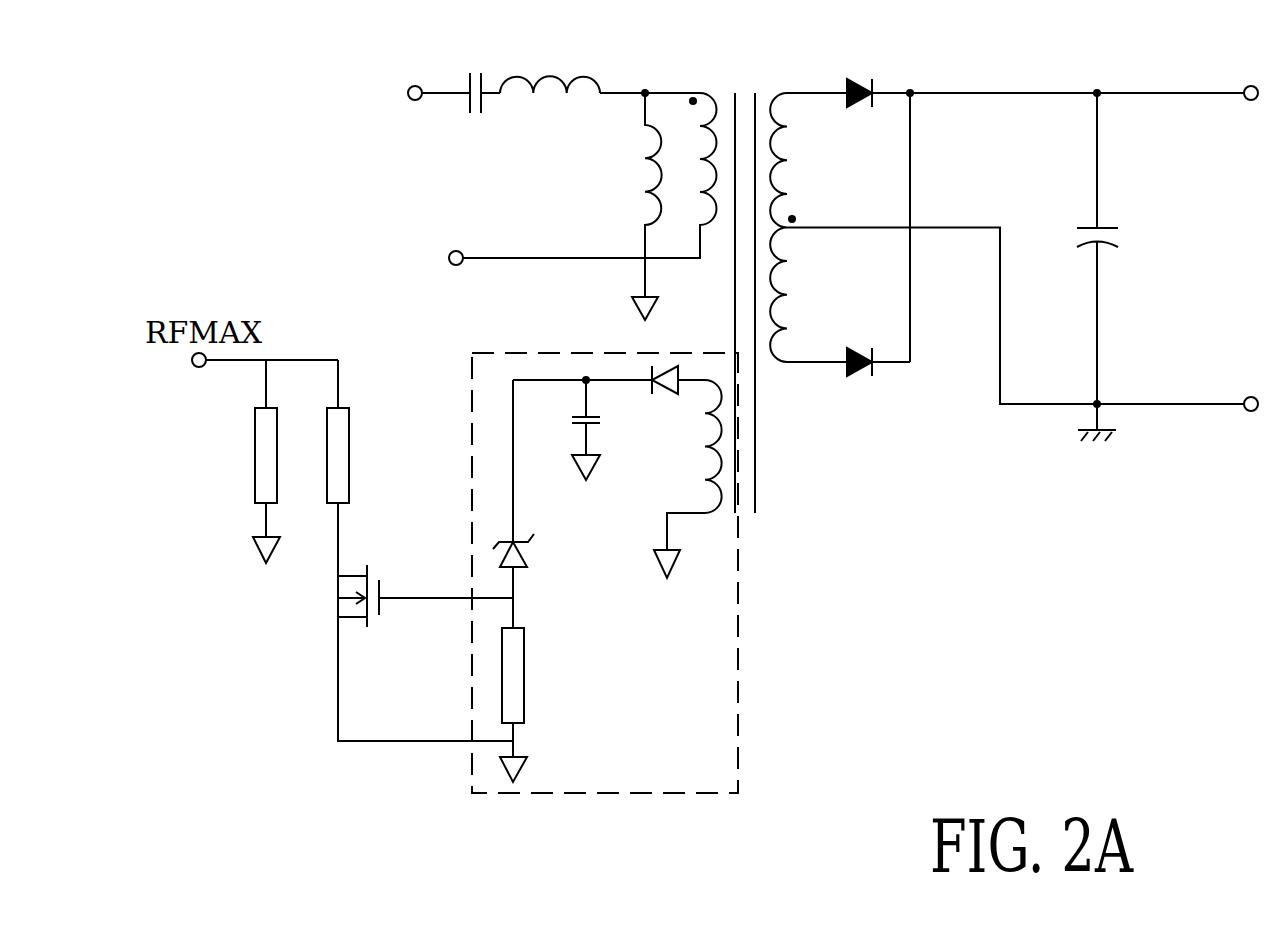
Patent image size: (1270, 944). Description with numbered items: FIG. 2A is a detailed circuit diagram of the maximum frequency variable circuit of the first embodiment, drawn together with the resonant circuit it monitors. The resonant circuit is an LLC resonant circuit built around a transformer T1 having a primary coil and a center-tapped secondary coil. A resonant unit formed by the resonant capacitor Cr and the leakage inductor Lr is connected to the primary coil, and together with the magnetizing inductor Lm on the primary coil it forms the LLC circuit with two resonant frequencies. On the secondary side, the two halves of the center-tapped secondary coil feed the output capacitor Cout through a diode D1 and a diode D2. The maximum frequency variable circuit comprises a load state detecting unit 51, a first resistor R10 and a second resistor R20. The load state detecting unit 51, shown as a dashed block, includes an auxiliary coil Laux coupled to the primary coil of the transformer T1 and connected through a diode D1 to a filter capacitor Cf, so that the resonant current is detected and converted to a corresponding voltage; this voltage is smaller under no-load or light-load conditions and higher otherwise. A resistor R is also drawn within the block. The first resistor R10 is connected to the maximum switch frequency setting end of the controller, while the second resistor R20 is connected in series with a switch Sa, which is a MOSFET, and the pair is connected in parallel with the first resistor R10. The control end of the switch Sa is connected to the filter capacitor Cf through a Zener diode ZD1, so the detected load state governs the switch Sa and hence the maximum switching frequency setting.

The load state detecting unit 51 is at (687, 573).
The resonant capacitor Cr is at (482, 69).
The leakage inductor Lr is at (550, 59).
The magnetizing inductor Lm is at (627, 206).
The transformer T1 is at (622, 268).
The diode D1 is at (758, 235).
The diode D2 is at (856, 386).
The output capacitor Cout is at (1137, 248).
The first resistor R10 is at (236, 461).
The second resistor R20 is at (370, 468).
The switch Sa is at (425, 653).
The filter capacitor Cf is at (564, 430).
The Zener diode ZD1 is at (542, 553).
The resistor R is at (527, 705).
The auxiliary coil Laux is at (720, 397).